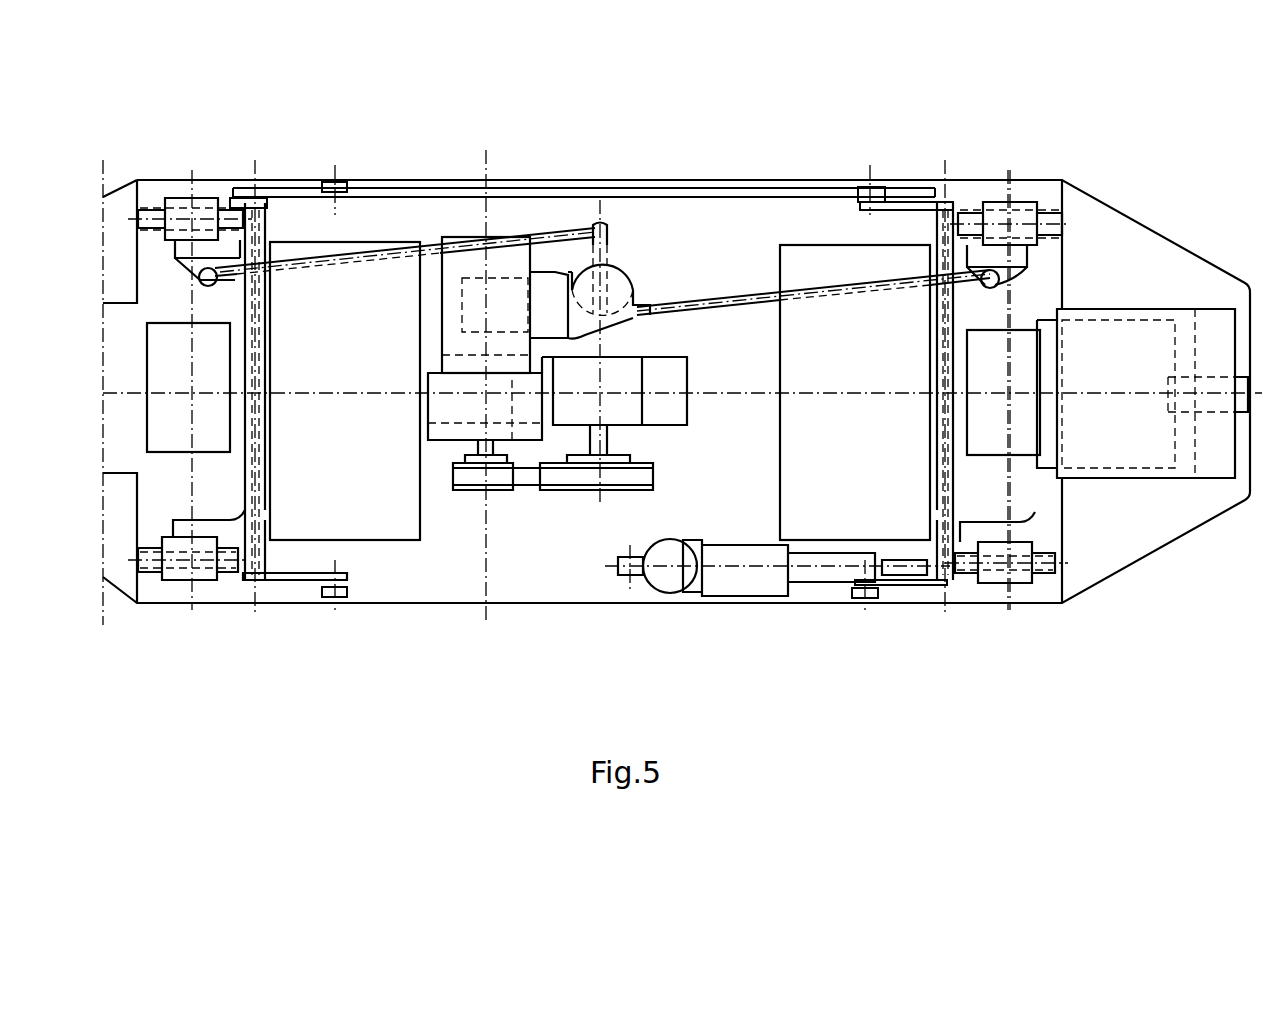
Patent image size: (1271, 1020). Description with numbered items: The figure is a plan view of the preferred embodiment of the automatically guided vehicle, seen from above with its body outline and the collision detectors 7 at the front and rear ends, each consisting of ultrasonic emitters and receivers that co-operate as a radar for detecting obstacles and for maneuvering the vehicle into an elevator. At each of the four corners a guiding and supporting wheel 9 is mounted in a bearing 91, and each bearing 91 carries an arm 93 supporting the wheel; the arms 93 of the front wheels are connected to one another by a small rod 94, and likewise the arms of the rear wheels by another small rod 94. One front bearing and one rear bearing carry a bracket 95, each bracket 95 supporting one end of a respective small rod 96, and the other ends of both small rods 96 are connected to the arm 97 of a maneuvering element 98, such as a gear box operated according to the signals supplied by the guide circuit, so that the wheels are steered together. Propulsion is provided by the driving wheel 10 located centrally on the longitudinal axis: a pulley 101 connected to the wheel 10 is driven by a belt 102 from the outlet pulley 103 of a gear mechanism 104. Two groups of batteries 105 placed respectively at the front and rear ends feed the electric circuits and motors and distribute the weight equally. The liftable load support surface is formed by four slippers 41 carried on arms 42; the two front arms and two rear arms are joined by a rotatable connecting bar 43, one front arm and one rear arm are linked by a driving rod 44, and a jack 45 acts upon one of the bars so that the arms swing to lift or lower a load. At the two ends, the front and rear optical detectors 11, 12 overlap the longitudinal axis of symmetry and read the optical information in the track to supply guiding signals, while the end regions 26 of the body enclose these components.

The collision detector 7 is at (1233, 414).
The guiding and supporting wheel 9 is at (180, 225).
The driving wheel 10 is at (668, 388).
The optical detector 11 is at (158, 338).
The optical detector 12 is at (1022, 344).
The hull end section 26 is at (120, 585).
The slipper 41 is at (340, 190).
The arm 42 is at (280, 200).
The rotatable connecting bar 43 is at (253, 565).
The driving rod 44 is at (597, 300).
The jack 45 is at (723, 578).
The bearing 91 is at (195, 205).
The arm 93 is at (920, 195).
The small rod 94 is at (250, 310).
The bracket 95 is at (202, 275).
The small rod 96 is at (374, 250).
The arm 97 is at (637, 305).
The maneuvering element 98 is at (545, 292).
The pulley 101 is at (567, 480).
The belt 102 is at (525, 480).
The outlet pulley 103 is at (468, 480).
The gear mechanism 104 is at (458, 263).
The group of batteries 105 is at (353, 520).